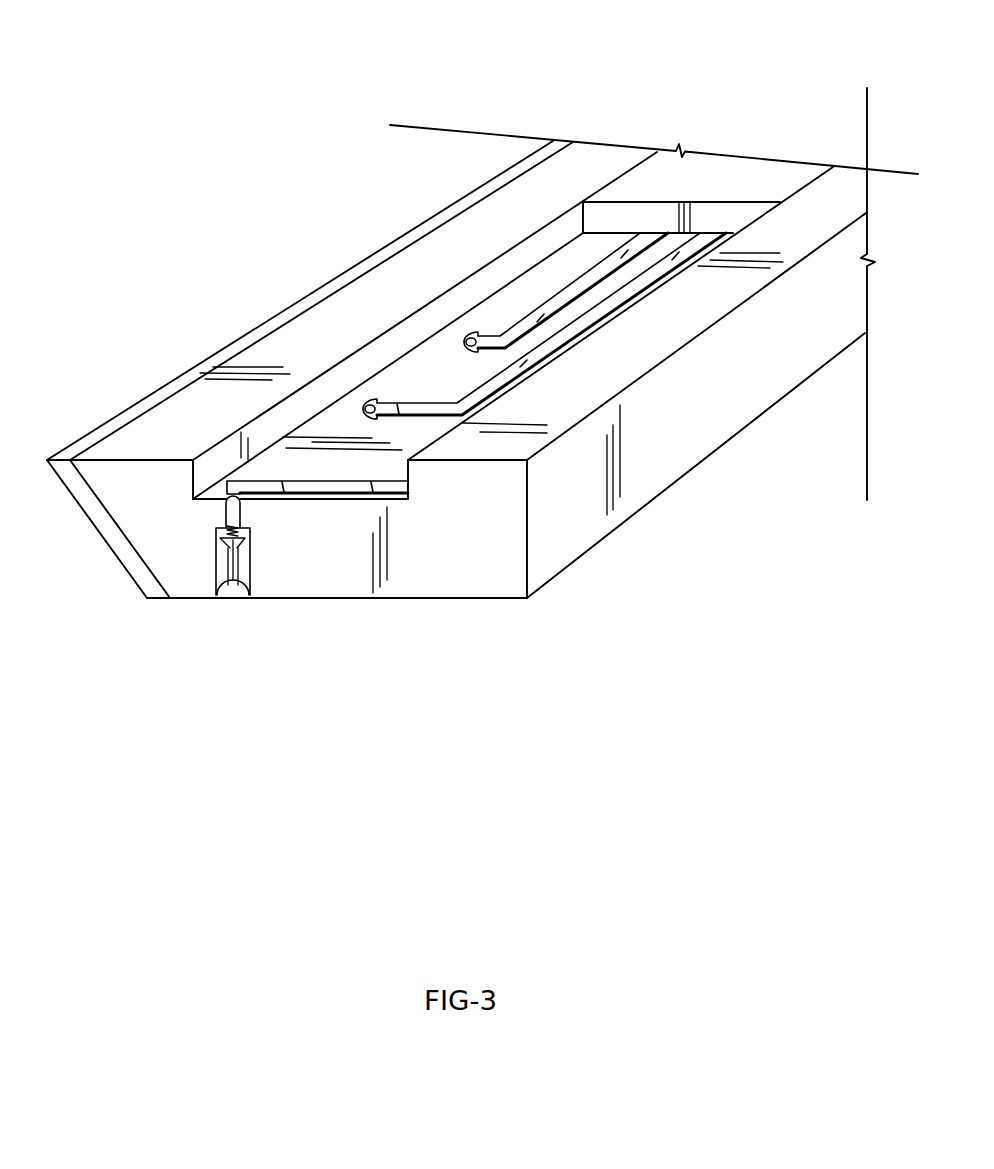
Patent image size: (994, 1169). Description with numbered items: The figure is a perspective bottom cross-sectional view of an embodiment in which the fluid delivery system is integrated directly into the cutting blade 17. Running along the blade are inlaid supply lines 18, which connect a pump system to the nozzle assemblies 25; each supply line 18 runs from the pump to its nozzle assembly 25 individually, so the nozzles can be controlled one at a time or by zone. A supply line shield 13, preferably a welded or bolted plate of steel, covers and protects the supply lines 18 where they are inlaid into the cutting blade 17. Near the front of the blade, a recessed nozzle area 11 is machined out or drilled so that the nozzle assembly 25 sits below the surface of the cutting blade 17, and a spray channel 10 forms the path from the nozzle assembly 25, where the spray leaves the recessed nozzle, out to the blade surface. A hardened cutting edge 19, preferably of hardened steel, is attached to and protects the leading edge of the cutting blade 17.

The spray channel 10 is at (233, 568).
The recessed nozzle area 11 is at (224, 578).
The supply line shield 13 is at (648, 178).
The cutting blade 17 is at (205, 403).
The inlaid supply lines 18 is at (600, 270).
The hardened cutting edge 19 is at (107, 527).
The nozzle assembly 25 is at (228, 542).